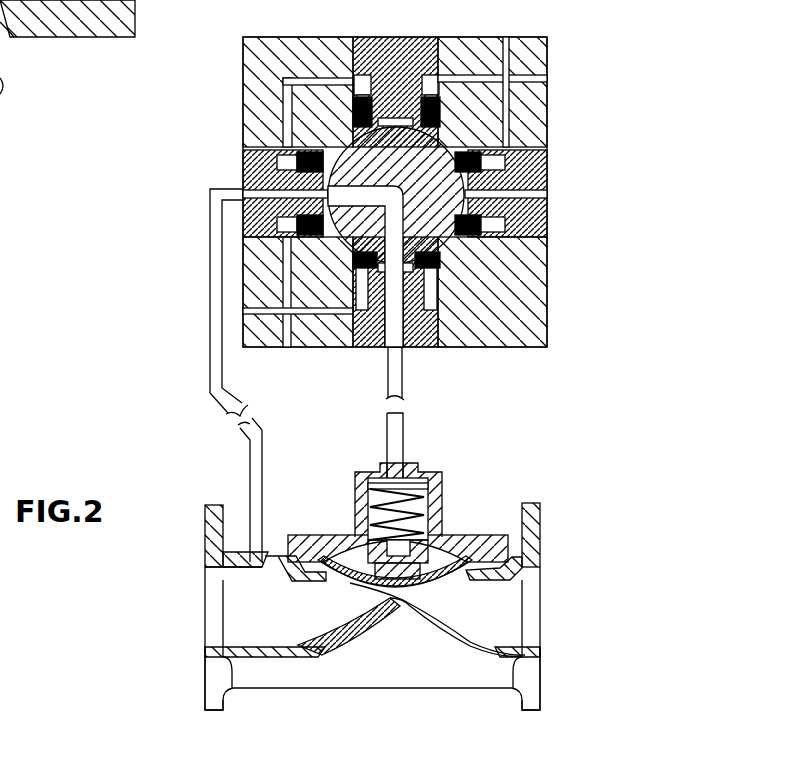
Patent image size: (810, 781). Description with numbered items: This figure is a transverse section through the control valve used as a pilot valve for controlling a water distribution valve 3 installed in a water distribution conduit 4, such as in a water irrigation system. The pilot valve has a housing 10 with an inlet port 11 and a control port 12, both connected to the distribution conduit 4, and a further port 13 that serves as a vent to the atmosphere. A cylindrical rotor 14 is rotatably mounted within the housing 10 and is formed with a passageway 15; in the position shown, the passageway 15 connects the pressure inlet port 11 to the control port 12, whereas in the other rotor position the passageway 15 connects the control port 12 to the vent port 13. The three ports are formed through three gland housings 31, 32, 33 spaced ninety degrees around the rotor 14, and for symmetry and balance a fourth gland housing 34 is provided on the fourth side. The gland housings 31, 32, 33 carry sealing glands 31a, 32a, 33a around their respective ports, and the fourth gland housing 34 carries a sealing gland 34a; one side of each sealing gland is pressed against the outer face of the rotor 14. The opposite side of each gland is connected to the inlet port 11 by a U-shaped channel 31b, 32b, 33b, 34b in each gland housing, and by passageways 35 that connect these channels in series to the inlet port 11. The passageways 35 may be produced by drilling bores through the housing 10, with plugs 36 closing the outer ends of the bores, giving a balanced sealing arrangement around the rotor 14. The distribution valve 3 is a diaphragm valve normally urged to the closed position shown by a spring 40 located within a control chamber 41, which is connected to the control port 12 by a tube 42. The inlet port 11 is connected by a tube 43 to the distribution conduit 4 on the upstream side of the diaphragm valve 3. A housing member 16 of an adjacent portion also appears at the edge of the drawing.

The water distribution valve 3 is at (355, 583).
The water distribution conduit 4 is at (462, 530).
The housing 10 is at (72, 38).
The inlet port 11 is at (222, 188).
The control port 12 is at (398, 360).
The vent port 13 is at (543, 195).
The rotor 14 is at (362, 163).
The passageway 15 is at (497, 330).
The housing member 16 is at (15, 40).
The gland housing 31 is at (245, 216).
The sealing gland 31a is at (320, 158).
The U-shaped channel 31b is at (310, 232).
The gland housing 32 is at (383, 300).
The sealing gland 32a is at (440, 290).
The U-shaped channel 32b is at (335, 300).
The gland housing 33 is at (540, 163).
The sealing gland 33a is at (478, 247).
The U-shaped channel 33b is at (503, 157).
The fourth gland housing 34 is at (378, 37).
The sealing gland 34a is at (355, 97).
The U-shaped channel 34b is at (432, 97).
The passageways 35 is at (302, 37).
The plugs 36 is at (497, 37).
The spring 40 is at (362, 512).
The control chamber 41 is at (447, 478).
The tube 42 is at (393, 430).
The tube 43 is at (250, 452).